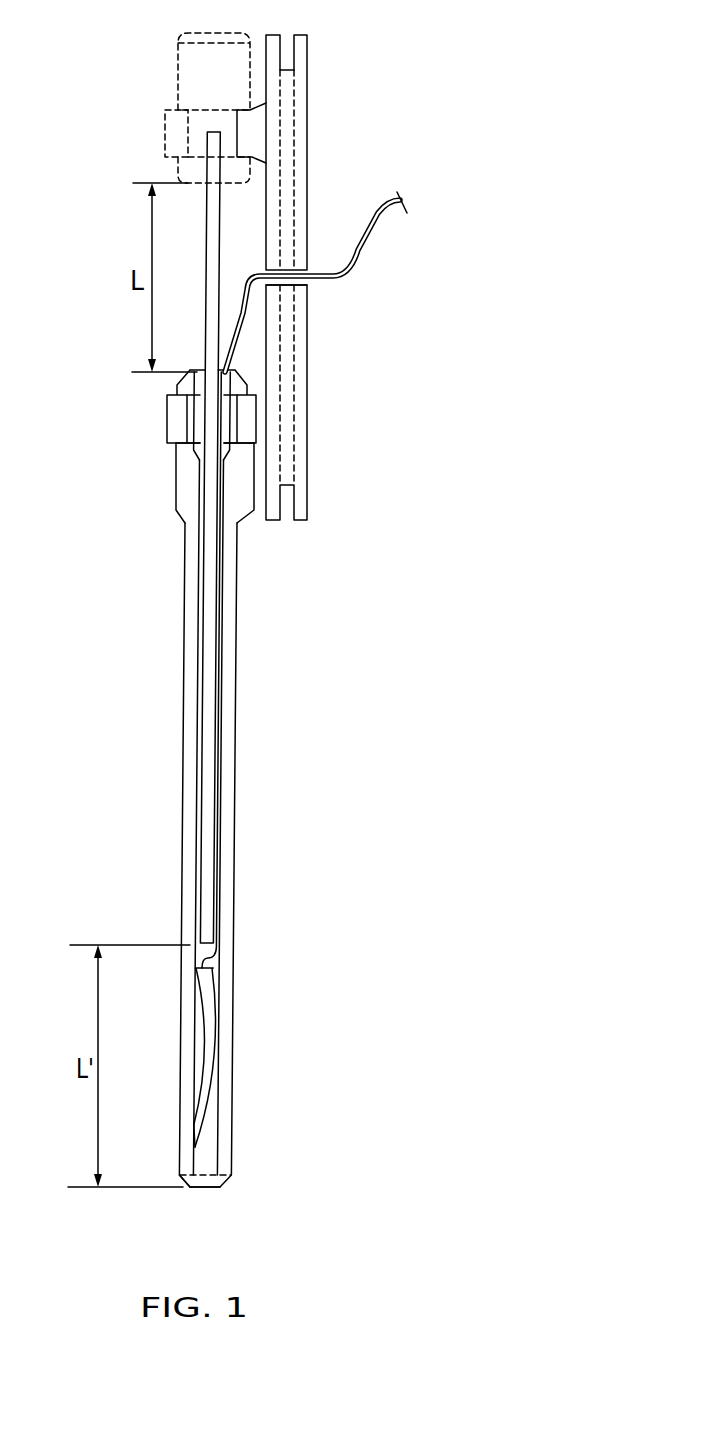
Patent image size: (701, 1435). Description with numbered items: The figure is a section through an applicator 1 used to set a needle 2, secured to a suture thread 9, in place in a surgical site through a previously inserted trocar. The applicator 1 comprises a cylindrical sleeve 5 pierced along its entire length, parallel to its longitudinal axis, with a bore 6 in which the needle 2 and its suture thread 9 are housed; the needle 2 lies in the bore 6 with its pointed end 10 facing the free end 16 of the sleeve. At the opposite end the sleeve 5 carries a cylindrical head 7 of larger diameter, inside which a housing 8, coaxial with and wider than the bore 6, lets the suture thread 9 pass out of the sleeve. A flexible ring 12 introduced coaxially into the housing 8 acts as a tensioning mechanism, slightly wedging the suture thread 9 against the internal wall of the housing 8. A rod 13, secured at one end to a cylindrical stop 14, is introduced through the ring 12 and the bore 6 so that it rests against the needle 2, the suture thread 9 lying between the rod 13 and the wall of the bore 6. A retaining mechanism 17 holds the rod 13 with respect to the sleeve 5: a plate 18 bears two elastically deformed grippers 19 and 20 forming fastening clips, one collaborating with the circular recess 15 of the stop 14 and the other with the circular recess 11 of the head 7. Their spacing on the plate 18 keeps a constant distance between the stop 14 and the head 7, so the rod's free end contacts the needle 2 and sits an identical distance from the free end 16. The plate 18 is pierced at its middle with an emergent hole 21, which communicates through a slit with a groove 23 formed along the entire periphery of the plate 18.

The applicator 1 is at (393, 758).
The needle 2 is at (212, 1058).
The cylindrical sleeve 5 is at (228, 785).
The bore 6 is at (203, 1188).
The cylindrical head 7 is at (232, 495).
The housing 8 is at (198, 458).
The suture thread 9 is at (380, 215).
The pointed end 10 is at (197, 1127).
The circular recess 11 is at (185, 437).
The flexible ring 12 is at (197, 418).
The rod 13 is at (210, 262).
The cylindrical stop 14 is at (190, 58).
The circular recess 15 is at (180, 120).
The free end 16 is at (190, 1188).
The retaining mechanism 17 is at (424, 409).
The plate 18 is at (295, 163).
The gripper 19 is at (168, 135).
The gripper 20 is at (172, 403).
The emergent hole 21 is at (307, 285).
The groove 23 is at (288, 62).